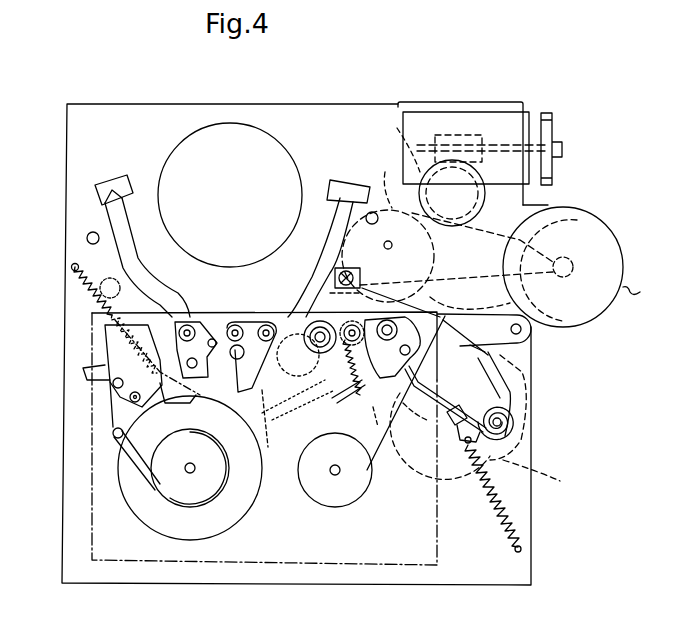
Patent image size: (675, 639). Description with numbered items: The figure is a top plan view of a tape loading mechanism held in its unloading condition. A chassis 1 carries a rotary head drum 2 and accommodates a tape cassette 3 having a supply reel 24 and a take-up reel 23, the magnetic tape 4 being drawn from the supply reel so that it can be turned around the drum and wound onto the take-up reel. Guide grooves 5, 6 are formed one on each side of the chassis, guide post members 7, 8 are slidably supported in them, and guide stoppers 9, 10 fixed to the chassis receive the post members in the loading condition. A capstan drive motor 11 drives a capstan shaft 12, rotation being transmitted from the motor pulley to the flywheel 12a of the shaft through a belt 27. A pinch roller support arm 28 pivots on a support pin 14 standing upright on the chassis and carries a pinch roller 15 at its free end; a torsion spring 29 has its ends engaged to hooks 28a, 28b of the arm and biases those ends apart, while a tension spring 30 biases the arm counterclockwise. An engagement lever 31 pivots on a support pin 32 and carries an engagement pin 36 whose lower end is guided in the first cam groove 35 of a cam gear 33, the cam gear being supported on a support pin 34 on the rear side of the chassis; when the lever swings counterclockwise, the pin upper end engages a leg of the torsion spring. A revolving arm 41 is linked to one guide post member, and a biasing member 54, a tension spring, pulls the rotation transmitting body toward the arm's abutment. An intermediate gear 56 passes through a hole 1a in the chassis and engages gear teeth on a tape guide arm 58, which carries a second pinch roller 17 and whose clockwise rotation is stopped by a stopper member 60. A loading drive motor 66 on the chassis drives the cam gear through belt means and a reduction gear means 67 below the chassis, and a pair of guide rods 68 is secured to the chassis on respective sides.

The chassis 1 is at (120, 104).
The rotary head drum 2 is at (212, 125).
The tape cassette 3 is at (92, 538).
The magnetic tape 4 is at (105, 407).
The guide groove 5 is at (330, 244).
The guide groove 6 is at (112, 218).
The guide post member 7 is at (236, 313).
The guide post member 8 is at (196, 313).
The guide stopper 9 is at (335, 180).
The guide stopper 10 is at (95, 186).
The capstan drive motor 11 is at (640, 294).
The capstan shaft 12 is at (391, 242).
The flywheel 12a is at (390, 180).
The support pin 14 is at (510, 432).
The pinch roller 15 is at (285, 313).
The pinch roller 17 is at (367, 300).
The hole 1a is at (318, 293).
The take-up reel 23 is at (335, 508).
The supply reel 24 is at (123, 483).
The belt 27 is at (580, 212).
The pinch roller support arm 28 is at (87, 238).
The hook 28a is at (527, 362).
The hook 28b is at (457, 427).
The torsion spring 29 is at (520, 413).
The tension spring 30 is at (508, 510).
The engagement lever 31 is at (436, 301).
The support pin 32 is at (532, 329).
The cam gear 33 is at (548, 478).
The support pin 34 is at (445, 399).
The first cam groove 35 is at (440, 436).
The engagement pin 36 is at (461, 387).
The revolving arm 41 is at (203, 465).
The biasing member 54 is at (319, 387).
The intermediate gear 56 is at (302, 300).
The tape guide arm 58 is at (388, 393).
The stopper member 60 is at (304, 400).
The loading drive motor 66 is at (472, 102).
The reduction gear means 67 is at (395, 143).
The guide rods 68 is at (372, 212).